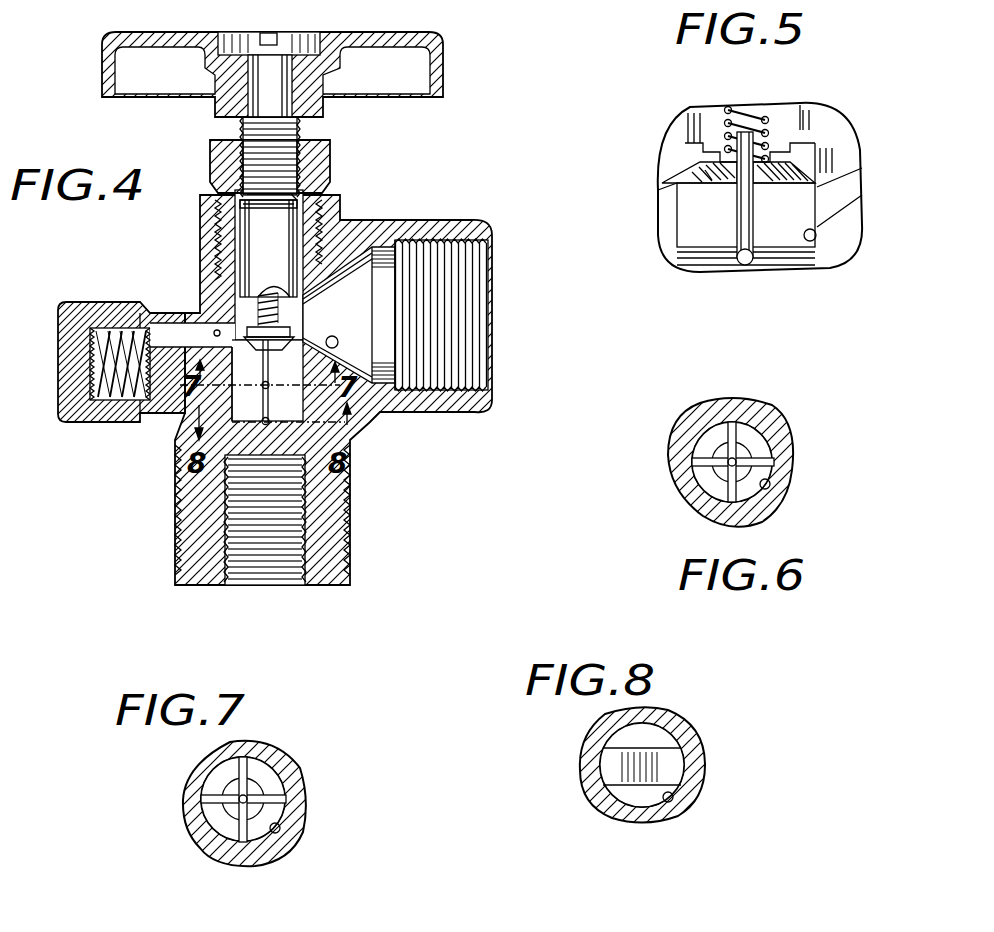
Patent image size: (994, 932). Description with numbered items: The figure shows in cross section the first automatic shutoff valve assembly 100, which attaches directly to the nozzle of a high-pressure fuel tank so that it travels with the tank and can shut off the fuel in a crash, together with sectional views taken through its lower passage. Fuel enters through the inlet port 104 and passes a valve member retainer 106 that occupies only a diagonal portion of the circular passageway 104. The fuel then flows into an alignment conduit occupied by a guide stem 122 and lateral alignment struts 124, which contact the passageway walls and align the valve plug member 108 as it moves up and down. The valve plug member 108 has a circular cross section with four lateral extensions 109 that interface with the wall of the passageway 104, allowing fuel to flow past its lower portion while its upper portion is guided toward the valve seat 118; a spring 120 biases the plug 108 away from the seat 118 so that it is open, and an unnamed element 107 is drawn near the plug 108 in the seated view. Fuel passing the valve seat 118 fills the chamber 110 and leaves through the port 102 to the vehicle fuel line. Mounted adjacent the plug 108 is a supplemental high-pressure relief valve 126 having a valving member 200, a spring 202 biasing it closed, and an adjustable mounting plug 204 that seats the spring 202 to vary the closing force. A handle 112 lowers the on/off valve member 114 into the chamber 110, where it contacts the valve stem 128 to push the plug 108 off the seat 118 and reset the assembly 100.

In FIG. 4, the automatic shutoff valve assembly 100 is at (330, 150).
In FIG. 4, the port 102 is at (496, 318).
In FIG. 4, the inlet port 104 is at (263, 586).
In FIG. 5, the inlet port 104 is at (815, 238).
In FIG. 6, the inlet port 104 is at (770, 484).
In FIG. 7, the inlet port 104 is at (280, 828).
In FIG. 8, the inlet port 104 is at (672, 800).
In FIG. 4, the valve member retainer 106 is at (318, 452).
In FIG. 8, the valve member retainer 106 is at (660, 750).
In FIG. 5, the chamber wall 107 is at (700, 162).
In FIG. 4, the valve plug member 108 is at (215, 402).
In FIG. 5, the valve plug member 108 is at (712, 182).
In FIG. 6, the valve plug member 108 is at (752, 448).
In FIG. 6, the lateral extensions 109 is at (738, 432).
In FIG. 4, the chamber 110 is at (270, 207).
In FIG. 5, the chamber 110 is at (806, 118).
In FIG. 4, the handle 112 is at (102, 80).
In FIG. 4, the valve member 114 is at (240, 215).
In FIG. 4, the valve seat 118 is at (247, 332).
In FIG. 4, the spring 120 is at (258, 305).
In FIG. 5, the spring 120 is at (744, 120).
In FIG. 4, the guide stem 122 is at (303, 422).
In FIG. 7, the guide stem 122 is at (250, 794).
In FIG. 4, the lateral alignment struts 124 is at (240, 422).
In FIG. 7, the lateral alignment struts 124 is at (280, 799).
In FIG. 4, the high-pressure relief valve 126 is at (118, 298).
In FIG. 4, the valve stem 128 is at (334, 342).
In FIG. 5, the valve stem 128 is at (755, 132).
In FIG. 4, the valving member 200 is at (172, 400).
In FIG. 4, the spring 202 is at (100, 302).
In FIG. 4, the mounting plug 204 is at (72, 338).